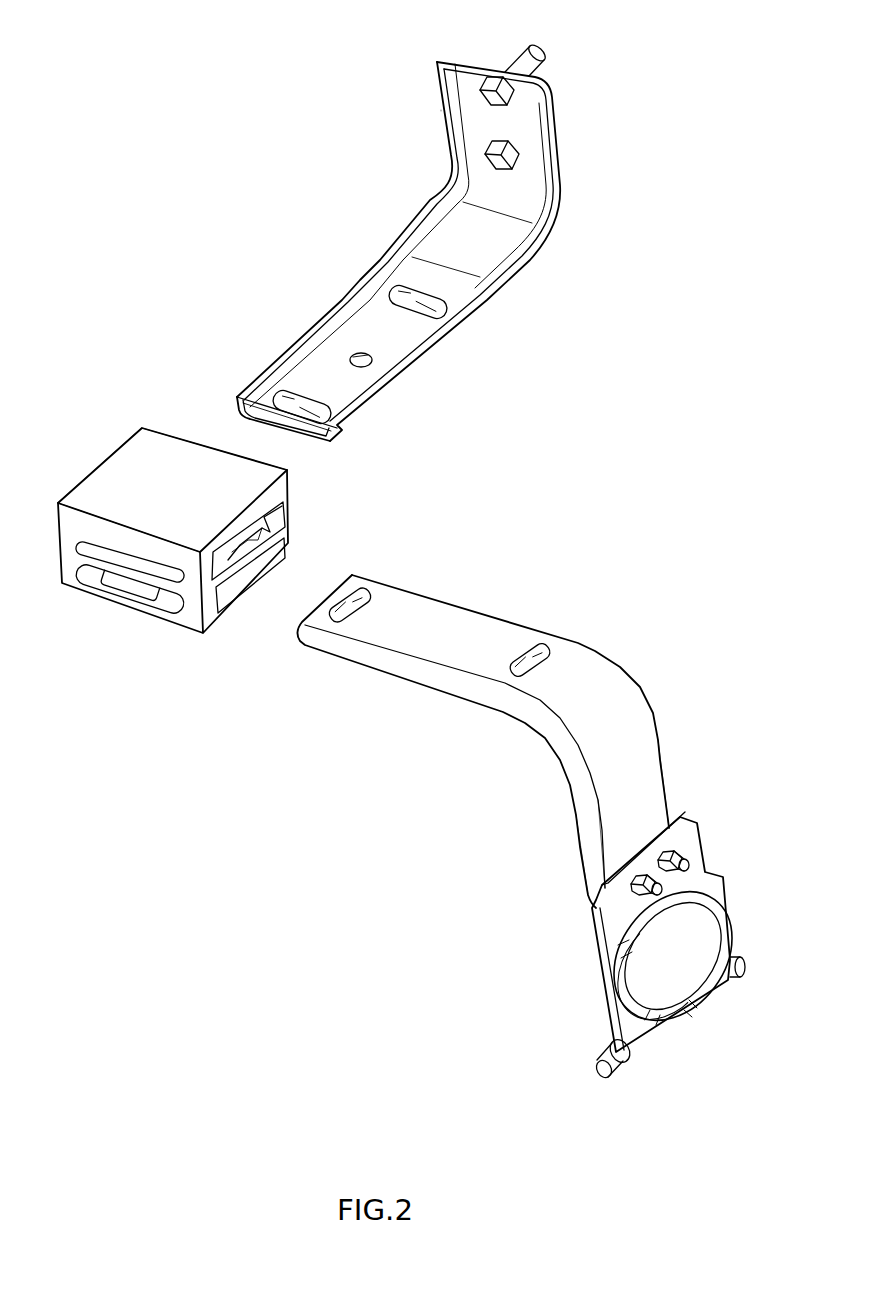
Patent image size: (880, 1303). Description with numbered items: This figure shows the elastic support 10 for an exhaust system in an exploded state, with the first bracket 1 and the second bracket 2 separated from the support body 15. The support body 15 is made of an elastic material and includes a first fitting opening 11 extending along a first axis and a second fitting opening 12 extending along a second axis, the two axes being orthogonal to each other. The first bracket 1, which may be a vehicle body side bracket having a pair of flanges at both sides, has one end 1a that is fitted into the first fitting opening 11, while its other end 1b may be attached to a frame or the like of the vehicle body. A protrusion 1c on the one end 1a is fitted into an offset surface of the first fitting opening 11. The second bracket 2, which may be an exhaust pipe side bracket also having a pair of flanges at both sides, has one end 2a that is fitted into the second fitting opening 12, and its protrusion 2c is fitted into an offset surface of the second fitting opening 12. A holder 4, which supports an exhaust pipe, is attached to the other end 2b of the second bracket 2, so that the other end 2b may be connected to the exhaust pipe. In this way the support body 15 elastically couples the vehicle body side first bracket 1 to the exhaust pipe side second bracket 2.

The first bracket 1 is at (432, 249).
The one end of the first bracket 1a is at (345, 421).
The other end of the first bracket 1b is at (553, 147).
The protrusion 1c is at (293, 404).
The second bracket 2 is at (493, 717).
The one end of the second bracket 2a is at (373, 590).
The other end of the second bracket 2b is at (651, 800).
The protrusion 2c is at (313, 625).
The holder 4 is at (713, 890).
The elastic support 10 is at (196, 515).
The first fitting opening 11 is at (130, 597).
The second fitting opening 12 is at (263, 527).
The support body 15 is at (160, 443).